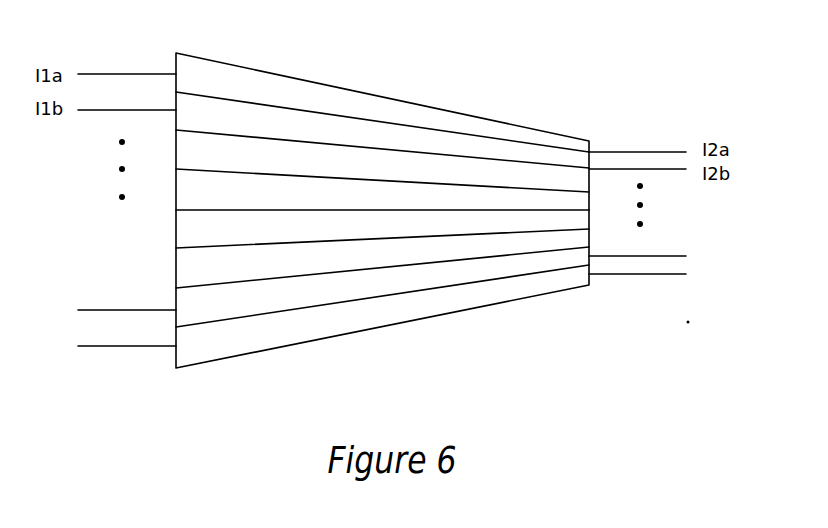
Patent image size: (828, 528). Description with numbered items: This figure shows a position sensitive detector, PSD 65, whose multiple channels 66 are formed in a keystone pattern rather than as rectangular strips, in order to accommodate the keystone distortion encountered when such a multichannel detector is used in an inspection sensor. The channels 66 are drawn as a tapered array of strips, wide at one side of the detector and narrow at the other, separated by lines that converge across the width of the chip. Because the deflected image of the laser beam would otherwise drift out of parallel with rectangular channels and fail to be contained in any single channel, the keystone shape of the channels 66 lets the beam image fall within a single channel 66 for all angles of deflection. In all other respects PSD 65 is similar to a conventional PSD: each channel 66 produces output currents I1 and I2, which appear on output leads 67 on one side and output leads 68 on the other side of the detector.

The PSD 65 is at (465, 113).
The channels 66 is at (282, 105).
The output leads 67 is at (103, 73).
The output leads 68 is at (617, 149).